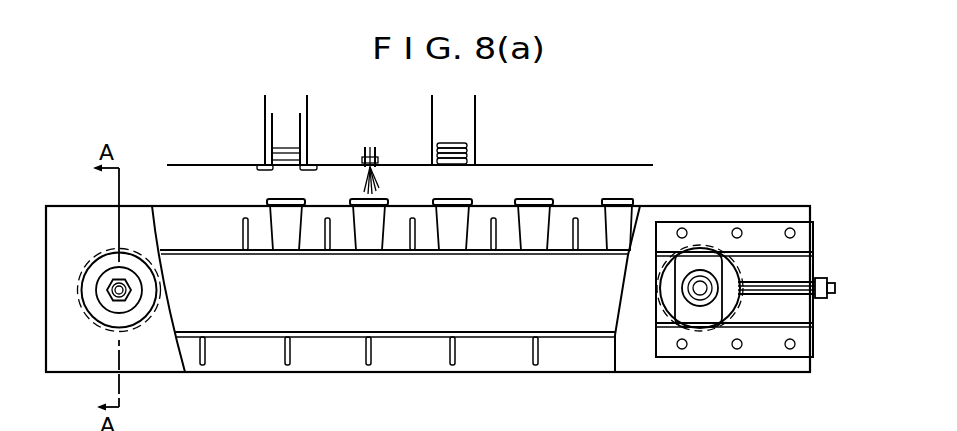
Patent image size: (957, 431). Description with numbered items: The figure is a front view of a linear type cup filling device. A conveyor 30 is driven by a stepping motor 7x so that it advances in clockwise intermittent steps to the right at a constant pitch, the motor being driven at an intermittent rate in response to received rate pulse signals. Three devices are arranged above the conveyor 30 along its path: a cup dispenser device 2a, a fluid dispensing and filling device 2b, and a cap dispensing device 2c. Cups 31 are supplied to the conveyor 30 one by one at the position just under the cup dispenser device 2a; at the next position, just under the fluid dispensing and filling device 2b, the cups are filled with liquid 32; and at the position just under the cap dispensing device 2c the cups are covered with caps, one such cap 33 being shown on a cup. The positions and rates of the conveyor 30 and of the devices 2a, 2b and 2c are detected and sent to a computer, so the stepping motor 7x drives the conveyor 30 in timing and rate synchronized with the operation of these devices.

The cup dispenser device 2a is at (310, 152).
The fluid dispensing and filling device 2b is at (377, 153).
The cap dispensing device 2c is at (474, 148).
The conveyor 30 is at (547, 253).
The cups 31 is at (282, 230).
The liquid 32 is at (377, 186).
The cup lid 33 is at (450, 195).
The stepping motor 7x is at (87, 265).